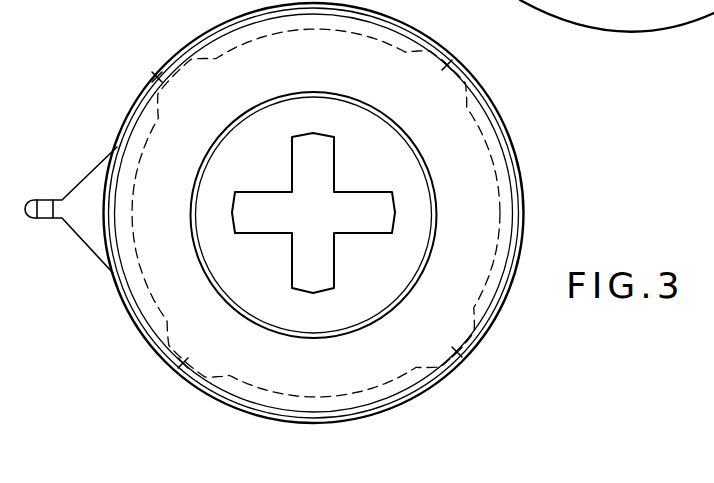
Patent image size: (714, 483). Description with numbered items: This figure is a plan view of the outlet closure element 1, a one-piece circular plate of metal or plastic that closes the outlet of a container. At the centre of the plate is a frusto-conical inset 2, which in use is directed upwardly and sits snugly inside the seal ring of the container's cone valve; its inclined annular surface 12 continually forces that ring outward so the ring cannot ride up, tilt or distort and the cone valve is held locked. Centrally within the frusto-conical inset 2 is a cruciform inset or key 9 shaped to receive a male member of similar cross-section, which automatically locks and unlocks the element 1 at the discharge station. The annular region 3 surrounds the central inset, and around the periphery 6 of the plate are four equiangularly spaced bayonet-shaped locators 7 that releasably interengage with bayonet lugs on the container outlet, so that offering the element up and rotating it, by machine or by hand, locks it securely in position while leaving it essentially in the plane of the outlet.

The outlet closure element 1 is at (533, 153).
The frusto-conical inset 2 is at (382, 170).
The annular ring portion 3 is at (320, 67).
The periphery 6 is at (512, 207).
The bayonet locators 7 is at (157, 77).
The cruciform inset 9 is at (323, 226).
The inclined annular surface 12 is at (42, 220).